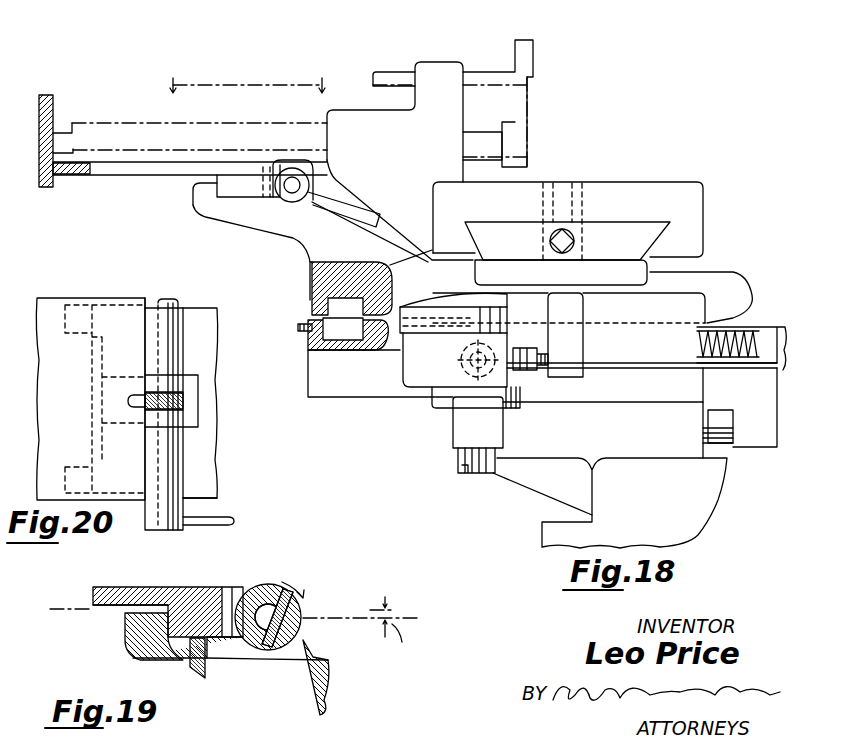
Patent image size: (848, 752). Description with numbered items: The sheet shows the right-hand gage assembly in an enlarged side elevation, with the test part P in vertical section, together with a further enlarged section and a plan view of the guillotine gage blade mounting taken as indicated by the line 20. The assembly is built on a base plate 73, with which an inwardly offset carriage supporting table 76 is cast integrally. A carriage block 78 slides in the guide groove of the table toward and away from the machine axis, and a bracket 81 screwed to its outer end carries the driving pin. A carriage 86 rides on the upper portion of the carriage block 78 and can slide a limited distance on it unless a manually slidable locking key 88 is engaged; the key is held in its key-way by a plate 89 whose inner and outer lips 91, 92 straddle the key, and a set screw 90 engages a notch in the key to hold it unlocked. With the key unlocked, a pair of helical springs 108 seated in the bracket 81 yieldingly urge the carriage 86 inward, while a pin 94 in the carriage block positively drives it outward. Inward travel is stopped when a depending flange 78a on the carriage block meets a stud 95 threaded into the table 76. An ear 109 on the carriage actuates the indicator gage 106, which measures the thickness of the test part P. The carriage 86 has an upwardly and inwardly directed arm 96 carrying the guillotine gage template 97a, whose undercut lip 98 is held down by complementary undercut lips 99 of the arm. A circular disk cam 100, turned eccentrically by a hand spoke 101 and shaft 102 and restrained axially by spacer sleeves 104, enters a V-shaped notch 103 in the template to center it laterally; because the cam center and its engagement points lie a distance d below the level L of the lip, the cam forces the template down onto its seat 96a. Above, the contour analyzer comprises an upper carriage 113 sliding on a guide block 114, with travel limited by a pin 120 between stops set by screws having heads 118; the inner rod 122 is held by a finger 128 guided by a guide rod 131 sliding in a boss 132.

In FIG. 18, the test part P is at (57, 97).
In FIG. 18, the line 20— 20 is at (249, 82).
In FIG. 18, the base plate 73 is at (717, 487).
In FIG. 18, the carriage supporting table 76 is at (438, 433).
In FIG. 18, the carriage block 78 is at (342, 388).
In FIG. 18, the depending flange 78a is at (770, 448).
In FIG. 18, the bracket 81 is at (763, 328).
In FIG. 18, the carriage 86 is at (727, 278).
In FIG. 18, the locking key 88 is at (306, 344).
In FIG. 18, the plate 89 is at (312, 280).
In FIG. 18, the set screw 90 is at (298, 327).
In FIG. 18, the inner lip 91 is at (393, 293).
In FIG. 18, the outer lip 92 is at (325, 288).
In FIG. 18, the pin 94 is at (401, 372).
In FIG. 18, the stud 95 is at (724, 425).
In FIG. 18, the arm 96 is at (248, 217).
In FIG. 20, the arm 96 is at (217, 480).
In FIG. 19, the arm 96 is at (282, 692).
In FIG. 19, the seat 96a is at (192, 678).
In FIG. 18, the guillotine gage template 97a is at (130, 172).
In FIG. 20, the guillotine gage template 97a is at (50, 305).
In FIG. 19, the guillotine gage template 97a is at (110, 587).
In FIG. 18, the undercut lip 98 is at (228, 183).
In FIG. 19, the undercut lip 98 is at (157, 660).
In FIG. 18, the undercut lips 99 is at (208, 187).
In FIG. 19, the undercut lips 99 is at (150, 622).
In FIG. 18, the circular disk cam 100 is at (284, 168).
In FIG. 20, the circular disk cam 100 is at (180, 405).
In FIG. 19, the circular disk cam 100 is at (264, 585).
In FIG. 18, the hand spoke 101 is at (358, 213).
In FIG. 20, the hand spoke 101 is at (227, 510).
In FIG. 20, the shaft 102 is at (178, 445).
In FIG. 19, the shaft 102 is at (310, 610).
In FIG. 20, the V-shaped notch 103 is at (140, 397).
In FIG. 19, the V-shaped notch 103 is at (243, 588).
In FIG. 20, the spacer sleeves 104 is at (182, 382).
In FIG. 18, the indicator gage 106 is at (417, 378).
In FIG. 18, the helical springs 108 is at (713, 358).
In FIG. 18, the ear 109 is at (573, 347).
In FIG. 18, the carriage 113 is at (672, 200).
In FIG. 18, the guide block 114 is at (617, 232).
In FIG. 18, the heads 118 is at (548, 240).
In FIG. 18, the pin 120 is at (577, 200).
In FIG. 18, the inner rod 122 is at (482, 130).
In FIG. 18, the finger 128 is at (538, 58).
In FIG. 18, the guide rod 131 is at (392, 70).
In FIG. 18, the boss 132 is at (436, 62).
In FIG. 19, the level L— L is at (234, 611).
In FIG. 19, the distance d is at (404, 630).